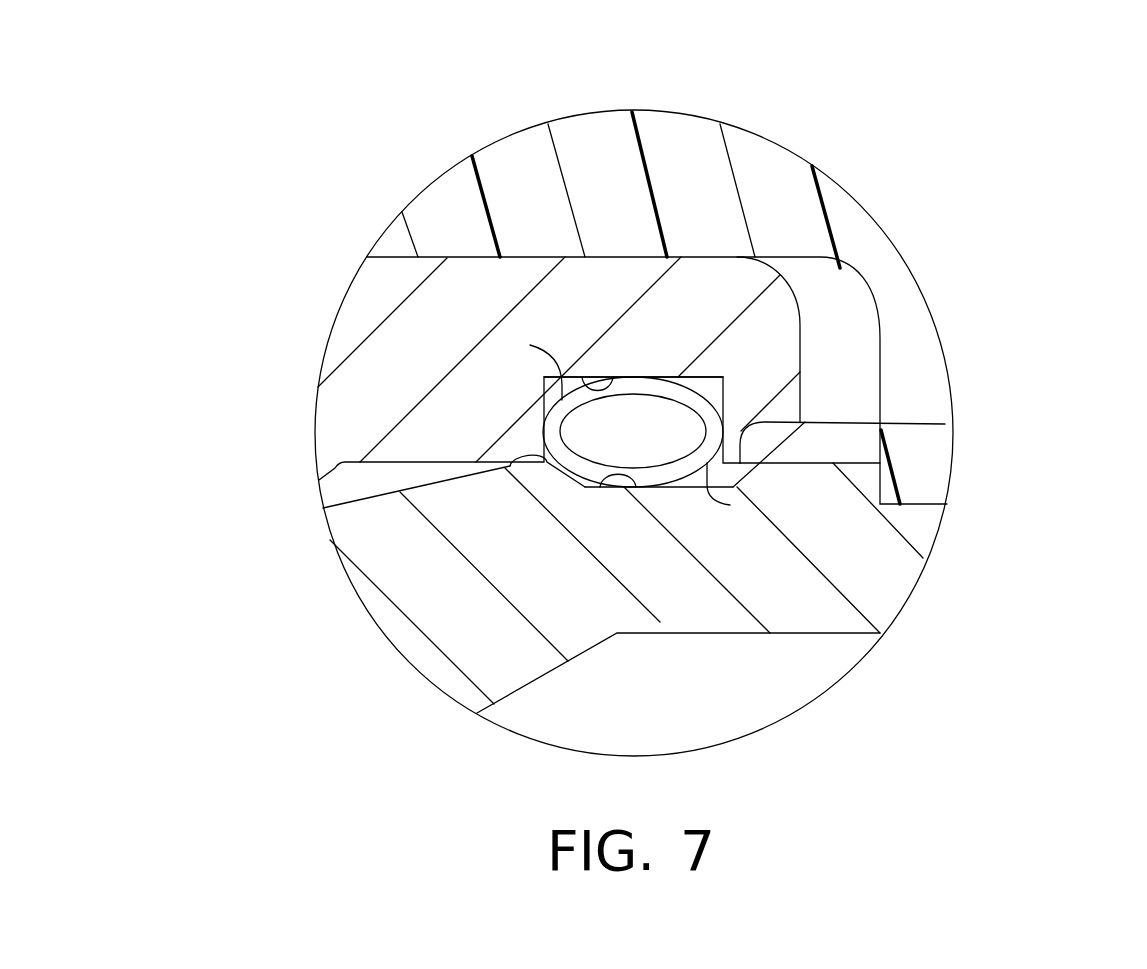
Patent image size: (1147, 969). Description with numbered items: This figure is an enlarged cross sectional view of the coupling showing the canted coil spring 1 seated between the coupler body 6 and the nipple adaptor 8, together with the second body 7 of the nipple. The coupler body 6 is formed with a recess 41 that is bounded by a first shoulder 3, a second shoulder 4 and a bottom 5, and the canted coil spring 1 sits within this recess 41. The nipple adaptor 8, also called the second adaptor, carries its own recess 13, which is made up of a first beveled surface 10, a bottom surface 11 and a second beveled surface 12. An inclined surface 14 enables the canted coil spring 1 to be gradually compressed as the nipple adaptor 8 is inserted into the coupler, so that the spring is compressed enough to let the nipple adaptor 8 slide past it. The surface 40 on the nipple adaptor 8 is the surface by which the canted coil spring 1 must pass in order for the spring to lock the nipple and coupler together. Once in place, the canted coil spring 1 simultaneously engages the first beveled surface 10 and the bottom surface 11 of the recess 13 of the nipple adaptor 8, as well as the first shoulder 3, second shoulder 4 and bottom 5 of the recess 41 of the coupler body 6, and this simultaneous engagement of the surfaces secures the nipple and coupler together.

The canted coil spring 1 is at (687, 398).
The first shoulder 3 is at (730, 505).
The second shoulder 4 is at (530, 345).
The bottom 5 is at (630, 383).
The coupler body 6 is at (455, 302).
The second body 7 is at (590, 148).
The nipple adaptor 8 is at (783, 590).
The first beveled surface 10 is at (587, 490).
The bottom surface 11 is at (636, 490).
The second beveled surface 12 is at (945, 424).
The recess 13 is at (697, 518).
The inclined surface 14 is at (373, 493).
The surface 40 is at (497, 468).
The recess 41 is at (635, 340).